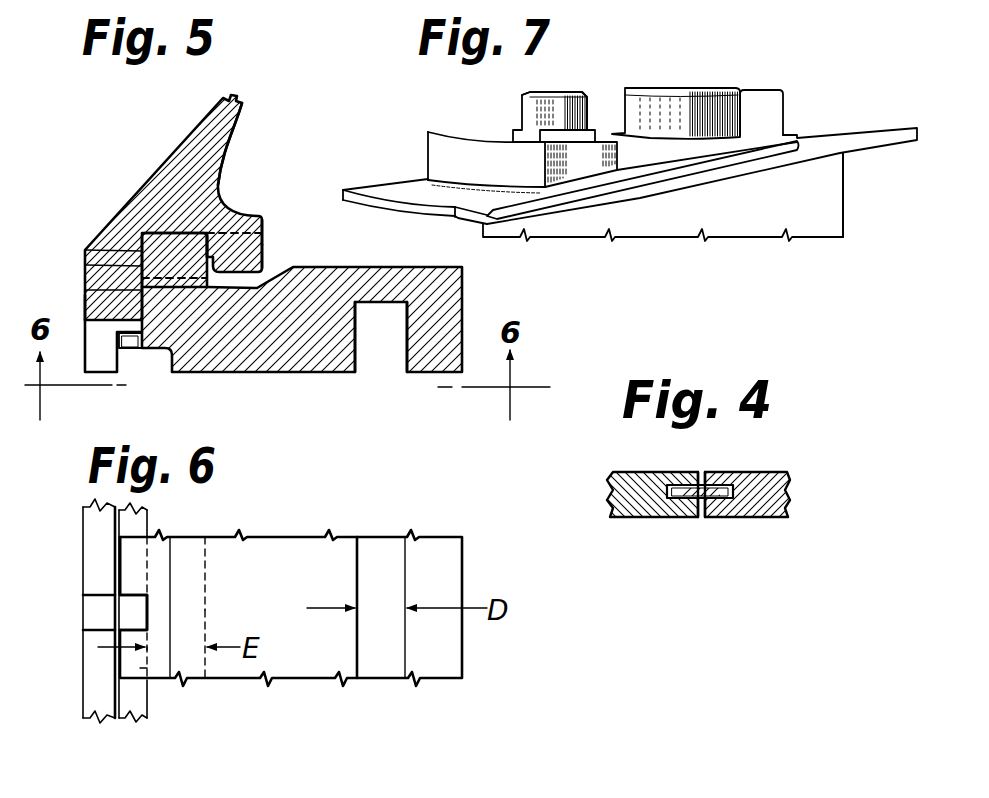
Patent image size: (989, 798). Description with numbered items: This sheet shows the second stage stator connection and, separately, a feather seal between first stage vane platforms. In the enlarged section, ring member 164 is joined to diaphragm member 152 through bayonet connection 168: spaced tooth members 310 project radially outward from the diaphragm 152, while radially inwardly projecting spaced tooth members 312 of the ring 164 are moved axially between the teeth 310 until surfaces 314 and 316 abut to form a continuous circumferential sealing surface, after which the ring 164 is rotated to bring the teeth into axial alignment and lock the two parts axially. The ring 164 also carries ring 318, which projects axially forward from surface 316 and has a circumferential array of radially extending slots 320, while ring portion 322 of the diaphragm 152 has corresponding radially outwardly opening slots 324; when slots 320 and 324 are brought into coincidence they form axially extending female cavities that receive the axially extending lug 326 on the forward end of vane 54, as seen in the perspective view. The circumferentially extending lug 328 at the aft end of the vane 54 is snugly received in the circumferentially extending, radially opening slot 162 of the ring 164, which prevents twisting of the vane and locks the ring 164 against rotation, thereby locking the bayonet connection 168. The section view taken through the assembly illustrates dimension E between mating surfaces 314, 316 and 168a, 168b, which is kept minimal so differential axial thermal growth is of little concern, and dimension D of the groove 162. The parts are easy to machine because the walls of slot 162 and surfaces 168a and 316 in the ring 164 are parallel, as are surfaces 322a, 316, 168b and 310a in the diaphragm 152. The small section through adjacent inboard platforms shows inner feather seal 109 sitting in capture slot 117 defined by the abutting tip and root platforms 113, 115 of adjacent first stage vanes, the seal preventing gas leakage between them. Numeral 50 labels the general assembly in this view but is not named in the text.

In FIG. 5, the blade member 50 is at (195, 118).
In FIG. 5, the diaphragm member 152 is at (247, 122).
In FIG. 6, the diaphragm member 152 is at (95, 545).
In FIG. 5, the mating surface 168a is at (142, 237).
In FIG. 6, the mating surface 168a is at (205, 557).
In FIG. 5, the mating surface 168b is at (205, 222).
In FIG. 6, the mating surface 168b is at (208, 580).
In FIG. 5, the bayonet connection 168 is at (210, 228).
In FIG. 5, the spaced tooth members 310 is at (265, 238).
In FIG. 5, the surface 310a is at (265, 256).
In FIG. 5, the ring member 164 is at (399, 260).
In FIG. 6, the ring member 164 is at (336, 531).
In FIG. 5, the slot 162 is at (364, 355).
In FIG. 6, the slot 162 is at (383, 553).
In FIG. 5, the spaced tooth members 312 is at (85, 250).
In FIG. 5, the surface 314 is at (85, 265).
In FIG. 6, the surface 314 is at (147, 648).
In FIG. 5, the surface 316 is at (85, 290).
In FIG. 6, the surface 316 is at (143, 668).
In FIG. 5, the ring 318 is at (133, 343).
In FIG. 6, the ring 318 is at (138, 547).
In FIG. 5, the ring portion 322 is at (104, 357).
In FIG. 6, the ring portion 322 is at (93, 697).
In FIG. 5, the surface 322a is at (84, 305).
In FIG. 7, the axially extending lug 326 is at (571, 102).
In FIG. 7, the circumferentially extending lug 328 is at (760, 97).
In FIG. 7, the capture slots 117 is at (708, 167).
In FIG. 4, the capture slots 117 is at (735, 486).
In FIG. 7, the vane 54 is at (811, 224).
In FIG. 6, the radially extending slots 320 is at (137, 607).
In FIG. 6, the radially outwardly opening slots 324 is at (95, 614).
In FIG. 4, the tip platform 113 is at (625, 490).
In FIG. 4, the root platform 115 is at (780, 497).
In FIG. 4, the inner feather seal 109 is at (690, 498).